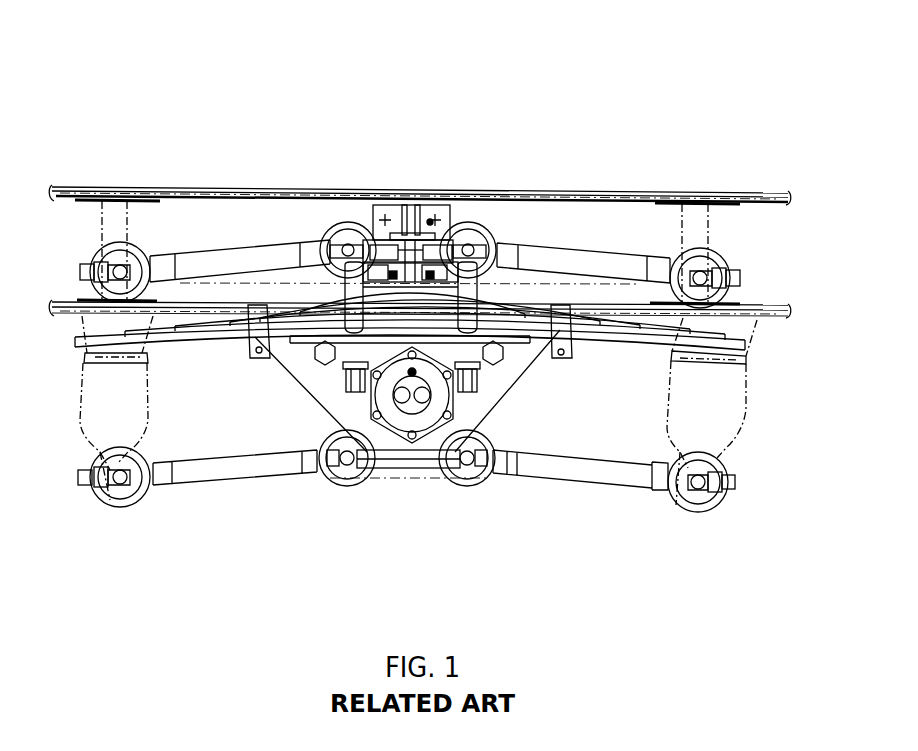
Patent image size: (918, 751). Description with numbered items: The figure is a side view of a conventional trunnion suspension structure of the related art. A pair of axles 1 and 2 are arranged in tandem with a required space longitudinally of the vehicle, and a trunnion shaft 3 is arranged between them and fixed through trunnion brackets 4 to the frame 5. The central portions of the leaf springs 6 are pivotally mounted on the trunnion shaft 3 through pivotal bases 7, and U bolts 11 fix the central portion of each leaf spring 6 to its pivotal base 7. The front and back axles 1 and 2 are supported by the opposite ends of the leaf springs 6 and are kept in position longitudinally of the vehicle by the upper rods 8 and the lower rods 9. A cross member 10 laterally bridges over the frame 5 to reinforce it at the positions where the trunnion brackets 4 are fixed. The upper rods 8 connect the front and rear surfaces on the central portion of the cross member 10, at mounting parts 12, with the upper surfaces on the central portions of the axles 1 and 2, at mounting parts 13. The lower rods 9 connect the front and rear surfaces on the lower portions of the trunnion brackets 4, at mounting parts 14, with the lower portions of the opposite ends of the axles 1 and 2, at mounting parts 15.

The axle 1 is at (105, 378).
The axle 2 is at (722, 428).
The trunnion shaft 3 is at (452, 400).
The trunnion brackets 4 is at (500, 374).
The frame 5 is at (147, 188).
The leaf springs 6 is at (628, 352).
The pivotal bases 7 is at (357, 343).
The upper rods 8 is at (198, 252).
The lower rods 9 is at (245, 472).
The cross member 10 is at (450, 205).
The U bolts 11 is at (317, 270).
The mounting parts 12 is at (375, 262).
The mounting parts 13 is at (113, 263).
The mounting parts 14 is at (345, 485).
The mounting parts 15 is at (110, 505).